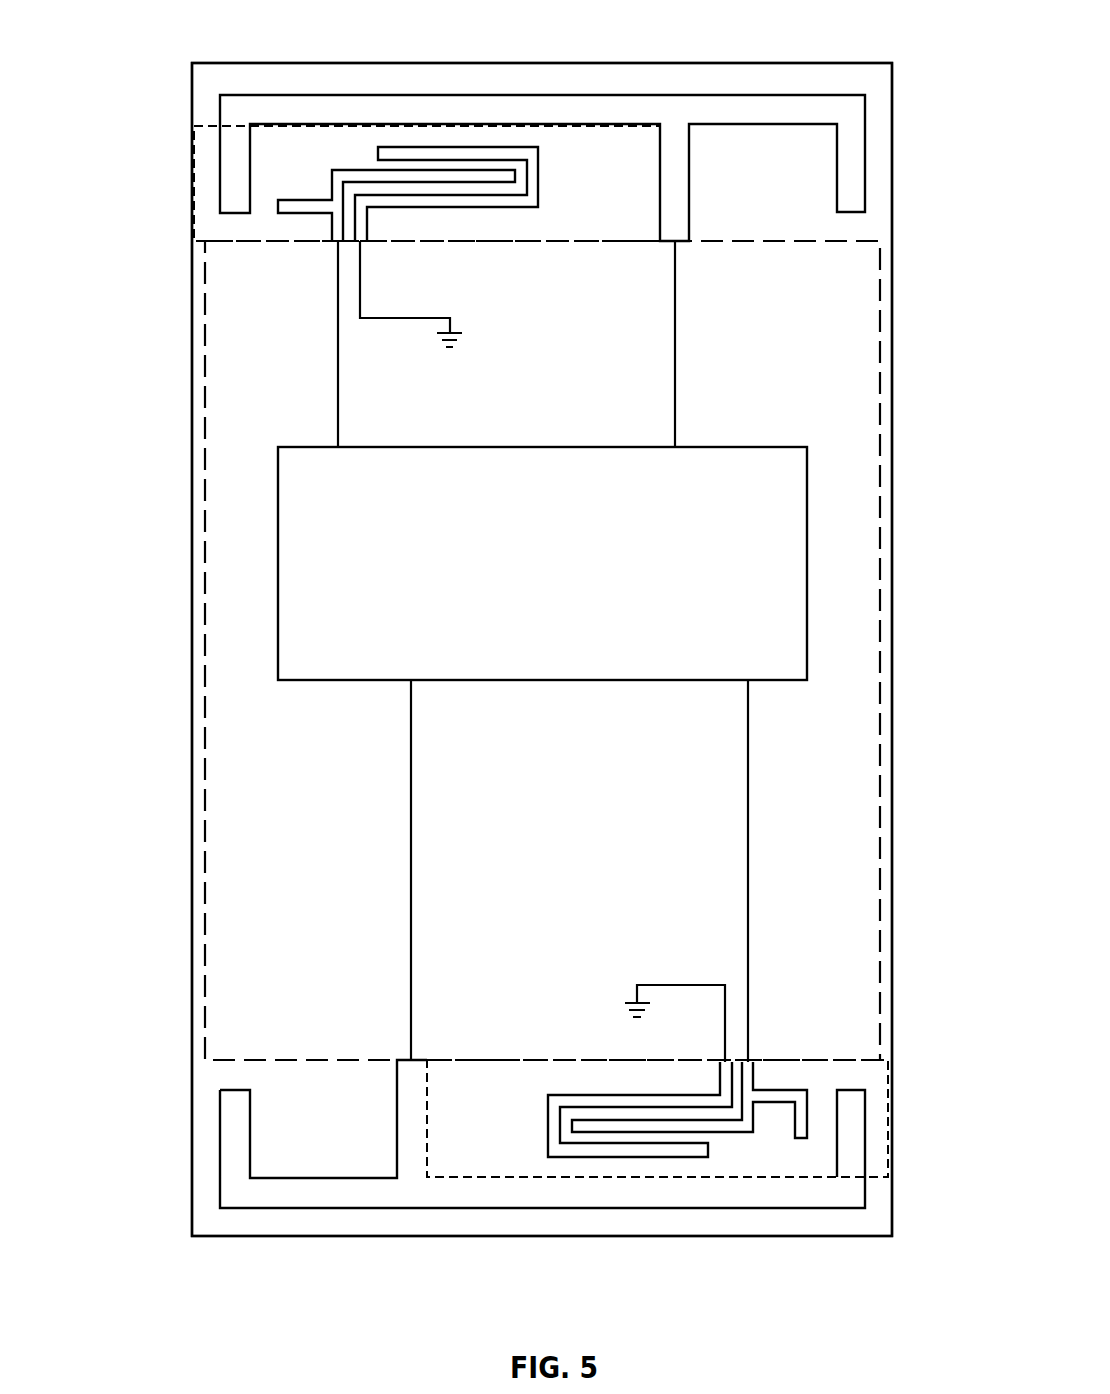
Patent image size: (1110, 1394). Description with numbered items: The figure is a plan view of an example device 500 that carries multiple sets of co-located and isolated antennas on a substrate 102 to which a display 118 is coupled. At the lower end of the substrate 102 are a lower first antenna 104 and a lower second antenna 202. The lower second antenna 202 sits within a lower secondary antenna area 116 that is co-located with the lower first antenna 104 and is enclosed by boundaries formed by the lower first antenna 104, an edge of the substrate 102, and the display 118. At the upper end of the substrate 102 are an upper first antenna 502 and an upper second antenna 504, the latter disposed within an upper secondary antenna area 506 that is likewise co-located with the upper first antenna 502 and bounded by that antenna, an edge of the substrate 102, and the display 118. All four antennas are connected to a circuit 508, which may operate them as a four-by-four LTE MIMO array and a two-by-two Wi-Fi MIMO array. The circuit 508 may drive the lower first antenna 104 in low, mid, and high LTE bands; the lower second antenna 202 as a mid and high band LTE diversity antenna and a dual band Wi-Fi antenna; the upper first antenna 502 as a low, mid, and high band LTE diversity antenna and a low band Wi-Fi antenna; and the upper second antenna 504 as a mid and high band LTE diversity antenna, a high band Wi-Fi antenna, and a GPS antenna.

The device 500 is at (167, 135).
The upper first antenna 502 is at (719, 88).
The upper second antenna 504 is at (322, 223).
The upper secondary antenna area 506 is at (389, 219).
The circuit 508 is at (563, 575).
The display 118 is at (563, 754).
The lower secondary antenna area 116 is at (697, 1084).
The lower second antenna 202 is at (770, 1078).
The substrate 102 is at (197, 1092).
The lower first antenna 104 is at (367, 1215).